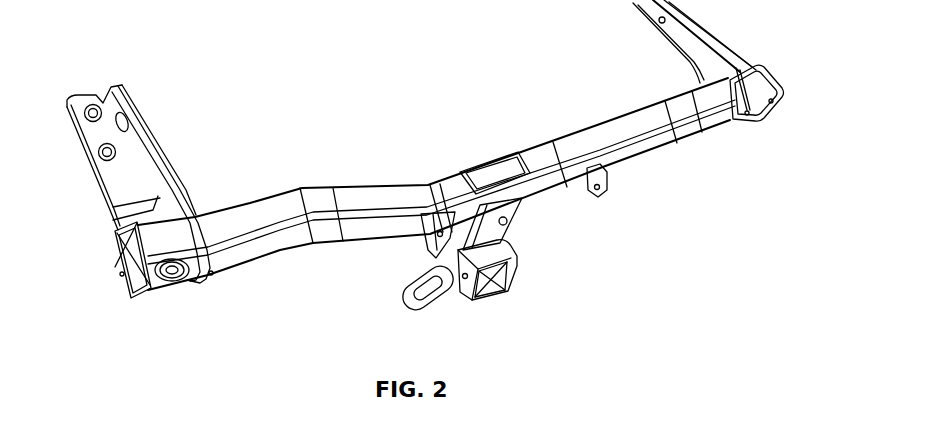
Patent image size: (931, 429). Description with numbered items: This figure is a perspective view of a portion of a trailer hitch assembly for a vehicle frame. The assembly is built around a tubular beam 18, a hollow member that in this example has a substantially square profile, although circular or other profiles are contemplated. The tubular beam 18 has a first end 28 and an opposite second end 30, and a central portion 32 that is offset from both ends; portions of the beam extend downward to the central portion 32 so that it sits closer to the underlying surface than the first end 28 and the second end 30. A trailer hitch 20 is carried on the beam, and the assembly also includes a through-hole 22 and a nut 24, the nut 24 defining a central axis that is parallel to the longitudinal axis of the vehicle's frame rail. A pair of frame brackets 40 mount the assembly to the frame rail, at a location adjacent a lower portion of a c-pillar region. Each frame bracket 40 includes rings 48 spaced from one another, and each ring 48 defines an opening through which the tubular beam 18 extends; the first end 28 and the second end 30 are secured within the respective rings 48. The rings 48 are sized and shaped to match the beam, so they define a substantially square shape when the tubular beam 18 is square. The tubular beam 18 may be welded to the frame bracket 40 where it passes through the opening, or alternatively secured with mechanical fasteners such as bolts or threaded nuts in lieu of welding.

The tubular beam 18 is at (400, 229).
The trailer hitch 20 is at (460, 248).
The through-hole 22 is at (168, 281).
The nut 24 is at (177, 284).
The first end 28 is at (115, 250).
The second end 30 is at (758, 80).
The central portion 32 is at (543, 164).
The frame bracket 40 is at (118, 173).
The ring 48 is at (122, 274).